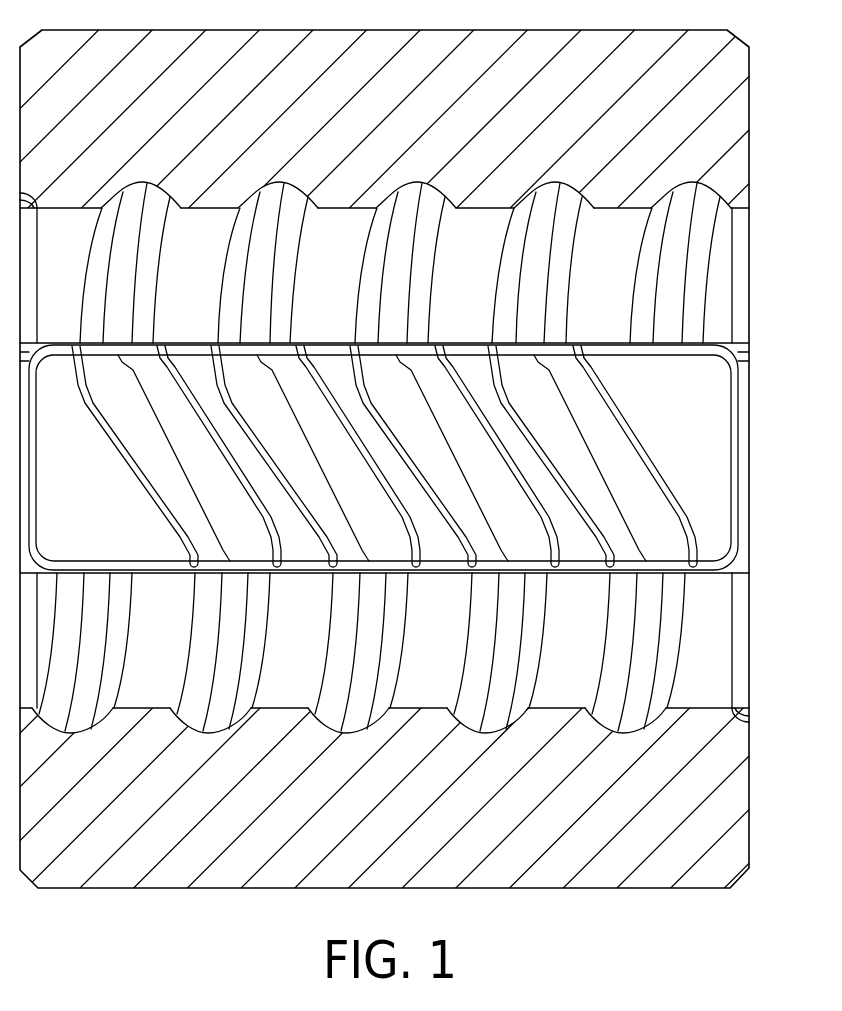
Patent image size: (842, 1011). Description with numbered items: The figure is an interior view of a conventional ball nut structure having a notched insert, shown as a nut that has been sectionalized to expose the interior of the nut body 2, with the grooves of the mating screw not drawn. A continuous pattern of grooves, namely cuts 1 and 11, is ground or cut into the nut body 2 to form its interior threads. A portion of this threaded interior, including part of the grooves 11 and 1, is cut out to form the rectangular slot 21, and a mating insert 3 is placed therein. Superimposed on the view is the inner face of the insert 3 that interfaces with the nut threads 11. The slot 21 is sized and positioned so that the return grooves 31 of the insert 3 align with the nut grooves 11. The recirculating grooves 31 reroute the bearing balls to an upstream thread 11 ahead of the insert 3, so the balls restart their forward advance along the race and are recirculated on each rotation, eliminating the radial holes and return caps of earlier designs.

The groove 1 is at (642, 203).
The nut groove 11 is at (690, 197).
The nut body 2 is at (677, 85).
The slot 21 is at (745, 541).
The insert 3 is at (692, 423).
The return groove 31 is at (643, 515).